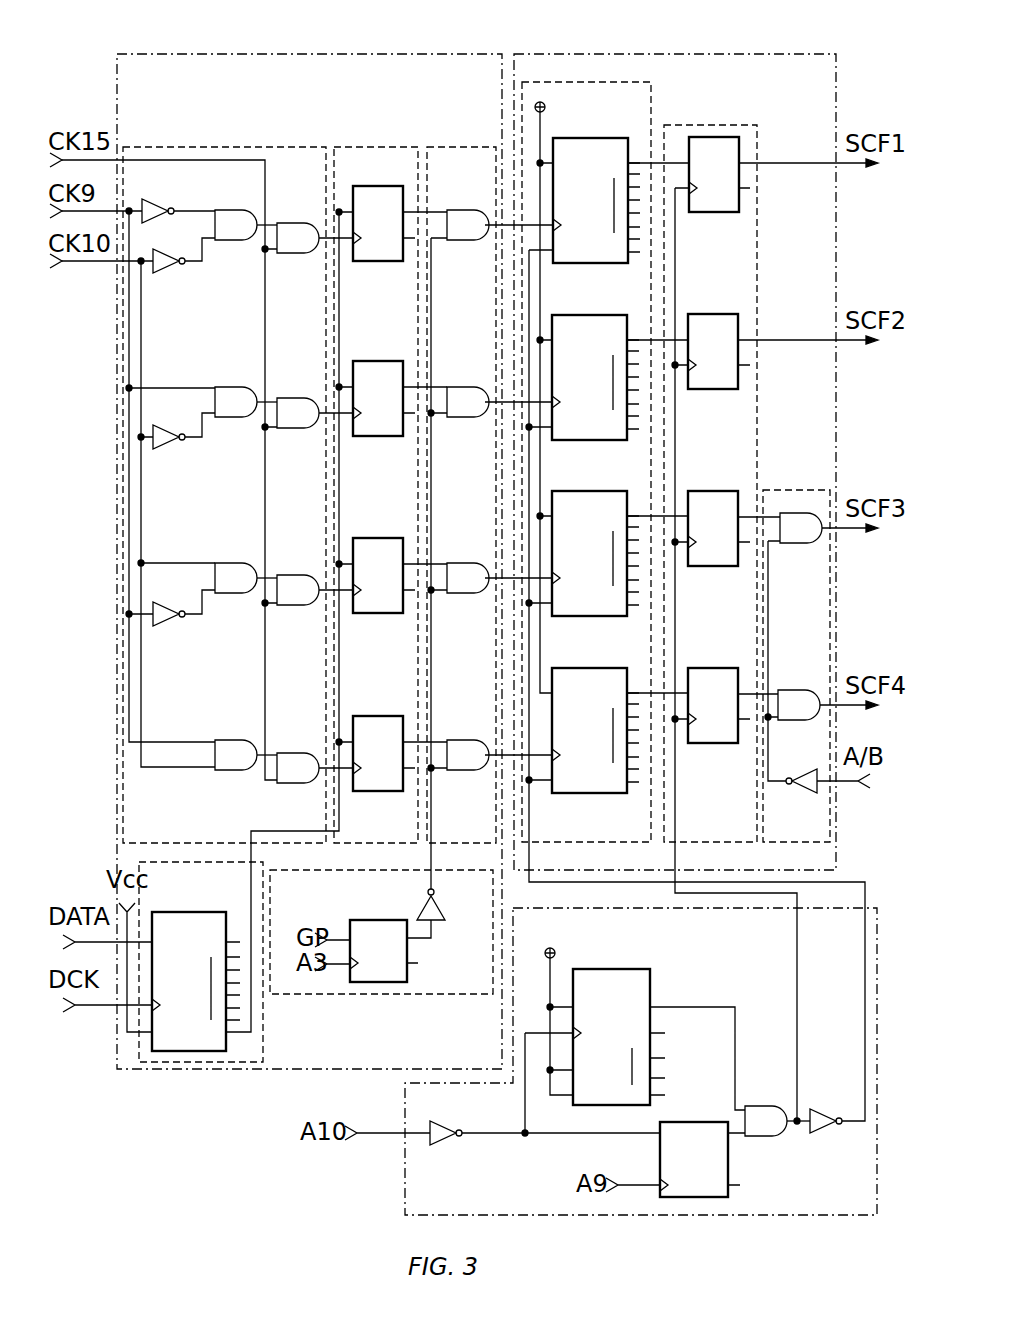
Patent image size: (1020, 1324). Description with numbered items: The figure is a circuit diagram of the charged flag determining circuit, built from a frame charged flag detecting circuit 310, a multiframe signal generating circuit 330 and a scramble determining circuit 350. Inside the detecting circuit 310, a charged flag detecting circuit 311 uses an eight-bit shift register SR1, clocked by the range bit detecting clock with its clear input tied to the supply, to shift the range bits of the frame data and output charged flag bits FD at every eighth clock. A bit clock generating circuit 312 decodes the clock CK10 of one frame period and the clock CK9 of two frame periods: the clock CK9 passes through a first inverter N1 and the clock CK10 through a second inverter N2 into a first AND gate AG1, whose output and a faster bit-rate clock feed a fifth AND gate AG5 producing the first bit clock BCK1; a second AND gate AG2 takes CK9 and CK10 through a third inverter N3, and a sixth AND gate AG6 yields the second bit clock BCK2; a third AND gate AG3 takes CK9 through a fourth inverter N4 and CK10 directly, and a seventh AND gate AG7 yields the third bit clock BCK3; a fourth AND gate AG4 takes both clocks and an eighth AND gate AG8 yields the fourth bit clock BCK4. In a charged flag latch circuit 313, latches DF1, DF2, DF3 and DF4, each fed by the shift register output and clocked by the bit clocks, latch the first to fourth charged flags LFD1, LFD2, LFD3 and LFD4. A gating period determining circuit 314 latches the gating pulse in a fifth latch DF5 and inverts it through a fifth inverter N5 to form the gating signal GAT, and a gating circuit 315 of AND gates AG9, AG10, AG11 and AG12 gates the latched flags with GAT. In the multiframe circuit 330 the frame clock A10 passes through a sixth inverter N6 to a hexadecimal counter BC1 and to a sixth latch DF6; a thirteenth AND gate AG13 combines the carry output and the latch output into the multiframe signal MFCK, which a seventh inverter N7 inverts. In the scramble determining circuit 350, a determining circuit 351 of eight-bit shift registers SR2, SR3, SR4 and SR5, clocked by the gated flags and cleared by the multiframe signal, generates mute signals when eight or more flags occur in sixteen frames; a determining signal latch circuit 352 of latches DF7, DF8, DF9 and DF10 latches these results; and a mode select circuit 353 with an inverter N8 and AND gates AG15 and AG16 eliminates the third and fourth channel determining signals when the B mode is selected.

The frame charged flag detecting circuit 310 is at (310, 54).
The scramble determining circuit 350 is at (681, 54).
The bit clock generating circuit 312 is at (233, 147).
The charged flag latch circuit 313 is at (376, 147).
The gating circuit 315 is at (458, 147).
The determining circuit 351 is at (652, 100).
The determining signal latch circuit 352 is at (758, 142).
The mode select circuit 353 is at (798, 490).
The charged flag detecting circuit 311 is at (264, 1032).
The gating period determining circuit 314 is at (433, 994).
The multiframe signal generating circuit 330 is at (405, 1188).
The first AND gate AG1 is at (237, 209).
The second AND gate AG2 is at (237, 386).
The third AND gate AG3 is at (237, 562).
The fourth AND gate AG4 is at (237, 739).
The fifth AND gate AG5 is at (299, 222).
The sixth AND gate AG6 is at (299, 397).
The seventh AND gate AG7 is at (299, 574).
The eighth AND gate AG8 is at (299, 752).
The ninth AND gate AG9 is at (466, 242).
The tenth AND gate AG10 is at (466, 418).
The eleventh AND gate AG11 is at (466, 594).
The twelfth AND gate AG12 is at (466, 771).
The thirteenth AND gate AG13 is at (770, 1137).
The AND gate AG15 is at (800, 545).
The AND gate AG16 is at (797, 689).
The first inverter N1 is at (168, 218).
The second inverter N2 is at (170, 270).
The third inverter N3 is at (170, 446).
The fourth inverter N4 is at (170, 623).
The fifth inverter N5 is at (440, 902).
The sixth inverter N6 is at (448, 1146).
The seventh inverter N7 is at (832, 1110).
The inverter N8 is at (803, 794).
The first latch DF1 is at (378, 264).
The second latch DF2 is at (375, 360).
The third latch DF3 is at (375, 537).
The fourth latch DF4 is at (375, 716).
The fifth latch DF5 is at (352, 920).
The sixth latch DF6 is at (710, 1122).
The seventh latch DF7 is at (714, 215).
The eighth latch DF8 is at (711, 313).
The ninth latch DF9 is at (711, 490).
The tenth latch DF10 is at (711, 667).
The 8-bit shift register SR1 is at (185, 912).
The second 8-bit shift register SR2 is at (588, 136).
The third 8-bit shift register SR3 is at (588, 313).
The fourth 8-bit shift register SR4 is at (588, 489).
The fifth 8-bit shift register SR5 is at (588, 666).
The hexadecimal counter BC1 is at (609, 969).
The first bit clock BCK1 is at (314, 256).
The second bit clock BCK2 is at (314, 431).
The third bit clock BCK3 is at (314, 607).
The fourth bit clock BCK4 is at (314, 786).
The first charged flag LFD1 is at (451, 210).
The second charged flag LFD2 is at (451, 386).
The third charged flag LFD3 is at (451, 562).
The fourth charged flag LFD4 is at (451, 739).
The charged flag bits FD is at (251, 832).
The gating signal GAT is at (426, 888).
The multiframe signal MFCK is at (870, 949).
The clock CK9 is at (208, 164).
The clock CK10 is at (262, 271).
The clock A10 is at (561, 1156).